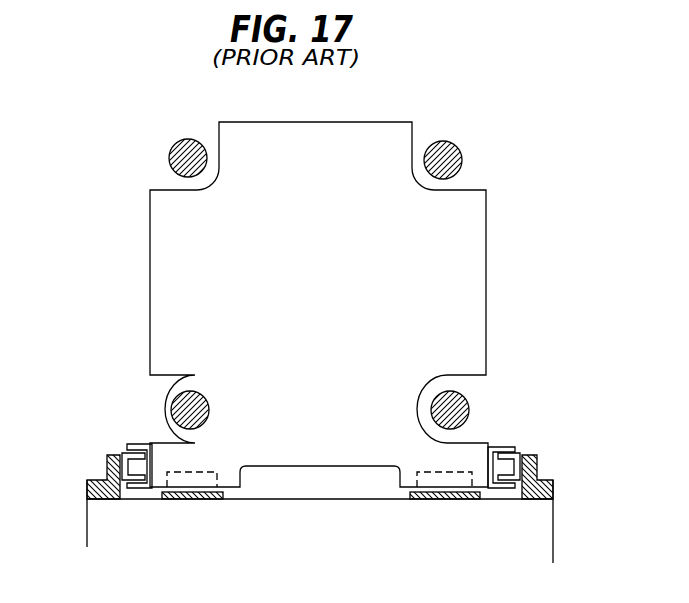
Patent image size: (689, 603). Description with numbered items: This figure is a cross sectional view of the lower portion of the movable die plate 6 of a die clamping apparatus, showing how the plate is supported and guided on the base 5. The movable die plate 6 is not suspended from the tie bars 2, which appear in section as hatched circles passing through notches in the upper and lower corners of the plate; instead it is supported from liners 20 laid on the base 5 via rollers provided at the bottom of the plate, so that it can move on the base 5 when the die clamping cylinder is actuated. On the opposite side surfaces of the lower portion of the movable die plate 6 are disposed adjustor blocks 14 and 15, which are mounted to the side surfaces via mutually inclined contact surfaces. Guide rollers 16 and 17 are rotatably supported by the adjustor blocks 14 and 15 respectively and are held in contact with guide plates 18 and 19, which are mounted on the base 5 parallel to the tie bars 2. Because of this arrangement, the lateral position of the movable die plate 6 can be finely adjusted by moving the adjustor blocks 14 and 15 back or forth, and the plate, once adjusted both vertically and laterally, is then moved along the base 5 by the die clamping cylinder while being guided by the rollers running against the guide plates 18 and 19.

The tie bars 2 is at (181, 150).
The base 5 is at (538, 533).
The movable die plate 6 is at (463, 240).
The adjustor block 14 is at (136, 443).
The adjustor block 15 is at (500, 447).
The guide roller 16 is at (130, 467).
The guide roller 17 is at (510, 470).
The guide plate 18 is at (102, 462).
The guide plate 19 is at (535, 460).
The liners 20 is at (198, 500).